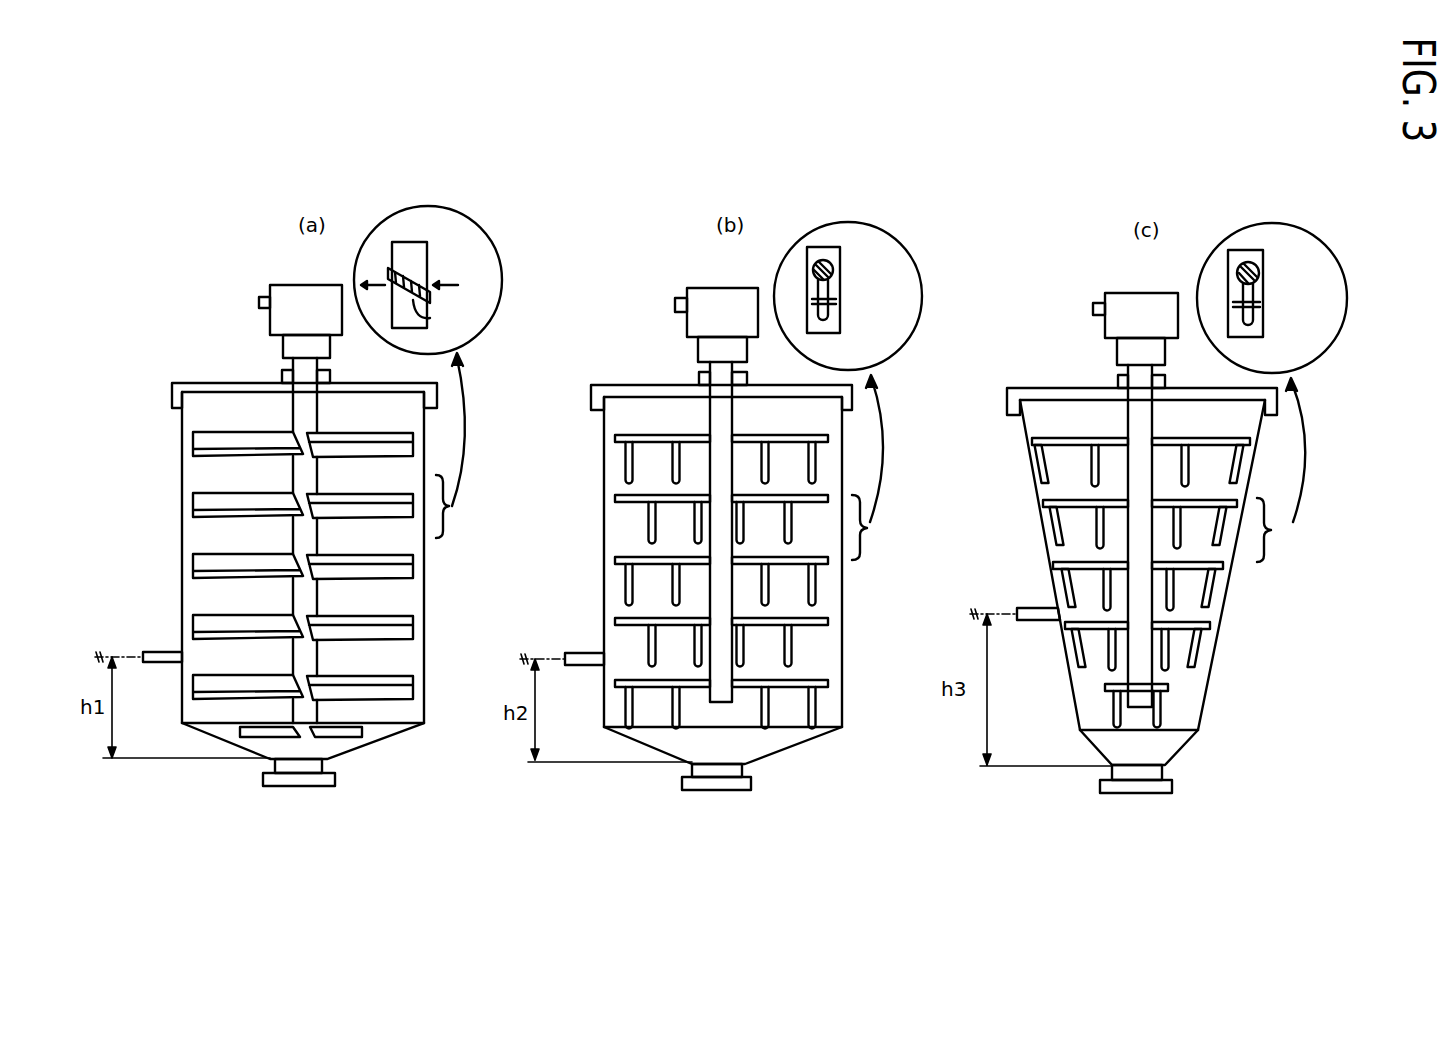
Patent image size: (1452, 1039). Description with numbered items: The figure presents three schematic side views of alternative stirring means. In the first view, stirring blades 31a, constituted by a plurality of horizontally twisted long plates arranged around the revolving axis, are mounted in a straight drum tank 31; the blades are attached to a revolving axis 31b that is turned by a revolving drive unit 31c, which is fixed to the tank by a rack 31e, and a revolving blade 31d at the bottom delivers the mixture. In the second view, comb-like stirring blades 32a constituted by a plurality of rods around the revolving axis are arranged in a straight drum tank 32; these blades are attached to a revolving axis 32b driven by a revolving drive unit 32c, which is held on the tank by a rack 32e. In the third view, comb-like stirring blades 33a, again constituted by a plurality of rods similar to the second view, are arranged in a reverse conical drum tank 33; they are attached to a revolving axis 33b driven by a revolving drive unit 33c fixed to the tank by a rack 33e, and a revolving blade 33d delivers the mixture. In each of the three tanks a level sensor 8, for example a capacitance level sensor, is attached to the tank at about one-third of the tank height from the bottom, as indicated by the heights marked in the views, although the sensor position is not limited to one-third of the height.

The level sensor 8 is at (152, 650).
The straight drum tank 31 is at (254, 376).
The stirring blades 31a is at (358, 432).
The revolving axis 31b is at (310, 477).
The revolving drive unit 31c is at (294, 285).
The revolving blade 31d is at (340, 737).
The rack 31e is at (226, 383).
The straight drum tank 32 is at (677, 367).
The comb-like stirring blades 32a is at (780, 435).
The revolving axis 32b is at (710, 419).
The revolving drive unit 32c is at (712, 288).
The rack 32e is at (645, 385).
The reverse conical drum tank 33 is at (1085, 382).
The comb-like stirring blades 33a is at (1200, 438).
The revolving axis 33b is at (1128, 428).
The revolving drive unit 33c is at (1130, 293).
The revolving blade 33d is at (1160, 713).
The rack 33e is at (1060, 388).